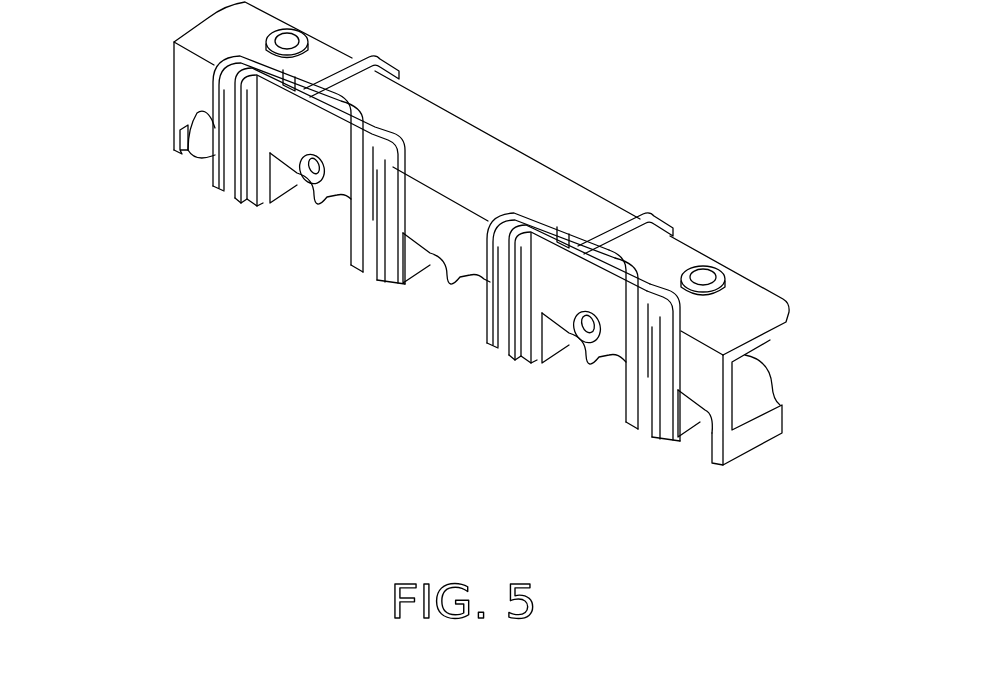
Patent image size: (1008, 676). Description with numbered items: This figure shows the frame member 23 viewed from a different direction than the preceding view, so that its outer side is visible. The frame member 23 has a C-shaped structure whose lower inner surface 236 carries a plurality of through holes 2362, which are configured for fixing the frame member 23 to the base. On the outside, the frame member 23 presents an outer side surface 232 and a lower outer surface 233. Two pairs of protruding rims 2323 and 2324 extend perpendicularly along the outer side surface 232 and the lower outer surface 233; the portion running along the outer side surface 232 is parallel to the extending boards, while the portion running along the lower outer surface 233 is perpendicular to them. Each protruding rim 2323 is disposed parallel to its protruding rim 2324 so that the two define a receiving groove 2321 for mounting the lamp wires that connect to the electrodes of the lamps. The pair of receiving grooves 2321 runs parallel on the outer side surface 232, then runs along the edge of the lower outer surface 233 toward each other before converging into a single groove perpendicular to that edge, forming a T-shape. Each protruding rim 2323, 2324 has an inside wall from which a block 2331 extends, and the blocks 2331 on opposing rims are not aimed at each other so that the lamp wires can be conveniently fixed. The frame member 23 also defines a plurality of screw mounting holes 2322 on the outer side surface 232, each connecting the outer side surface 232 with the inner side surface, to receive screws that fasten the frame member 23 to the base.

The frame member 23 is at (466, 253).
The outer side surface 232 is at (237, 170).
The lower outer surface 233 is at (427, 118).
The lower inner surface 236 is at (780, 341).
The receiving groove 2321 is at (502, 312).
The screw mounting hole 2322 is at (312, 182).
The protruding rim 2323 is at (627, 402).
The protruding rim 2324 is at (652, 424).
The block 2331 is at (632, 285).
The through hole 2362 is at (707, 273).